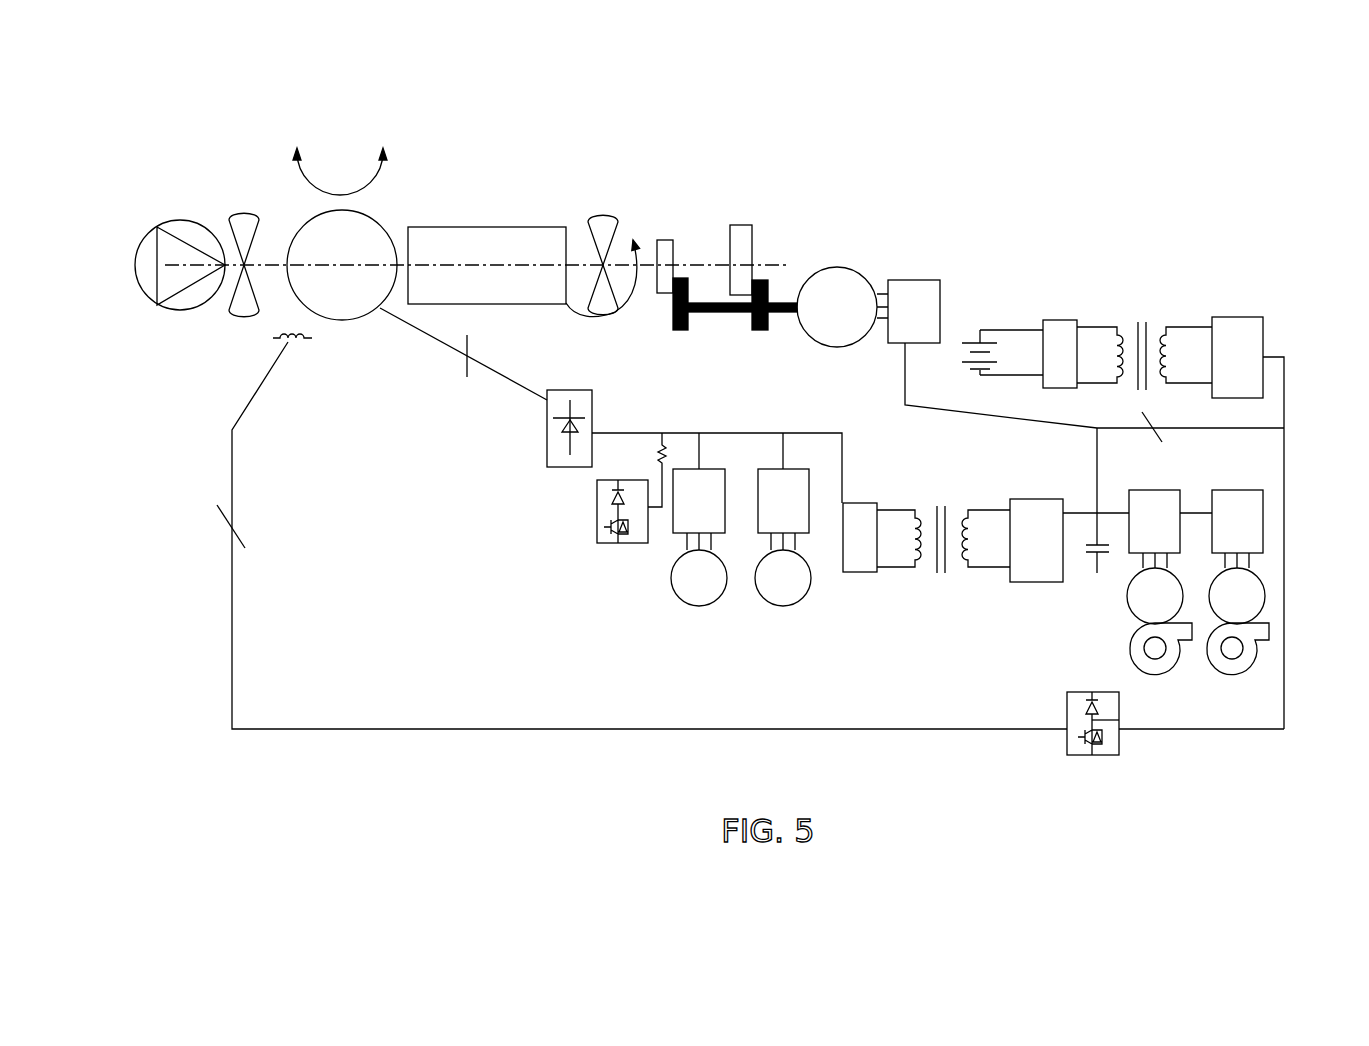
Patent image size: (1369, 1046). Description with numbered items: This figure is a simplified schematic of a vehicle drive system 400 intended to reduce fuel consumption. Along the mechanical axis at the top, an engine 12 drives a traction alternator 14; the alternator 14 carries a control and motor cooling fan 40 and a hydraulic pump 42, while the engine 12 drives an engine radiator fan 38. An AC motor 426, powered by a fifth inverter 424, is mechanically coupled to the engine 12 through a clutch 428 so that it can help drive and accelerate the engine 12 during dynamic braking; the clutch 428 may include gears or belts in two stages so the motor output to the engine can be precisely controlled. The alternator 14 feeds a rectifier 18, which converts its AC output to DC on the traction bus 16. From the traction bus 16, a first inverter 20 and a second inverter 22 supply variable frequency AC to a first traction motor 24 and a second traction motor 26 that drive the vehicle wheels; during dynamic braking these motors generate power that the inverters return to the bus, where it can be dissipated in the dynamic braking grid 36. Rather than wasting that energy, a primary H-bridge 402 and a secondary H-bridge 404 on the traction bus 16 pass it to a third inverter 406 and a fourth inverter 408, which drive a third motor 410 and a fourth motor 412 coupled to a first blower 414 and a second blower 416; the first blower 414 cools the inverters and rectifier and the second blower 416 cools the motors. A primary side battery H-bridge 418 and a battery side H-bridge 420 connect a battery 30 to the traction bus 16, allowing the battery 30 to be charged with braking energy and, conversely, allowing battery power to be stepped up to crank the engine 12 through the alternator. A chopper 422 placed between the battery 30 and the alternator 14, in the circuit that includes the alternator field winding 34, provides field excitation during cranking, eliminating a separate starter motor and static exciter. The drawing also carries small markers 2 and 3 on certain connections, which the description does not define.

The drive system 400 is at (735, 128).
The hydraulic pump 42 is at (140, 263).
The control and motor cooling fan 40 is at (233, 218).
The traction alternator 14 is at (303, 218).
The engine 12 is at (537, 227).
The engine radiator fan 38 is at (600, 212).
The clutch 428 is at (700, 226).
The AC motor 426 is at (837, 267).
The fifth inverter 424 is at (915, 280).
The battery 30 is at (987, 313).
The battery side H-bridge 420 is at (1092, 308).
The primary side battery H-bridge 418 is at (1197, 306).
The conductor 2 is at (699, 486).
The field winding 34 is at (264, 422).
The conductor 3 is at (463, 354).
The rectifier 18 is at (592, 393).
The traction bus 16 is at (667, 416).
The dynamic braking grid 36 is at (637, 557).
The first inverter 20 is at (712, 469).
The second inverter 22 is at (796, 469).
The first traction motor 24 is at (703, 603).
The second traction motor 26 is at (787, 603).
The primary H-bridge 402 is at (896, 595).
The secondary H-bridge 404 is at (1002, 595).
The third inverter 406 is at (1167, 490).
The fourth inverter 408 is at (1237, 490).
The third motor 410 is at (1127, 597).
The fourth motor 412 is at (1265, 595).
The first blower 414 is at (1128, 649).
The second blower 416 is at (1258, 650).
The chopper 422 is at (1122, 748).